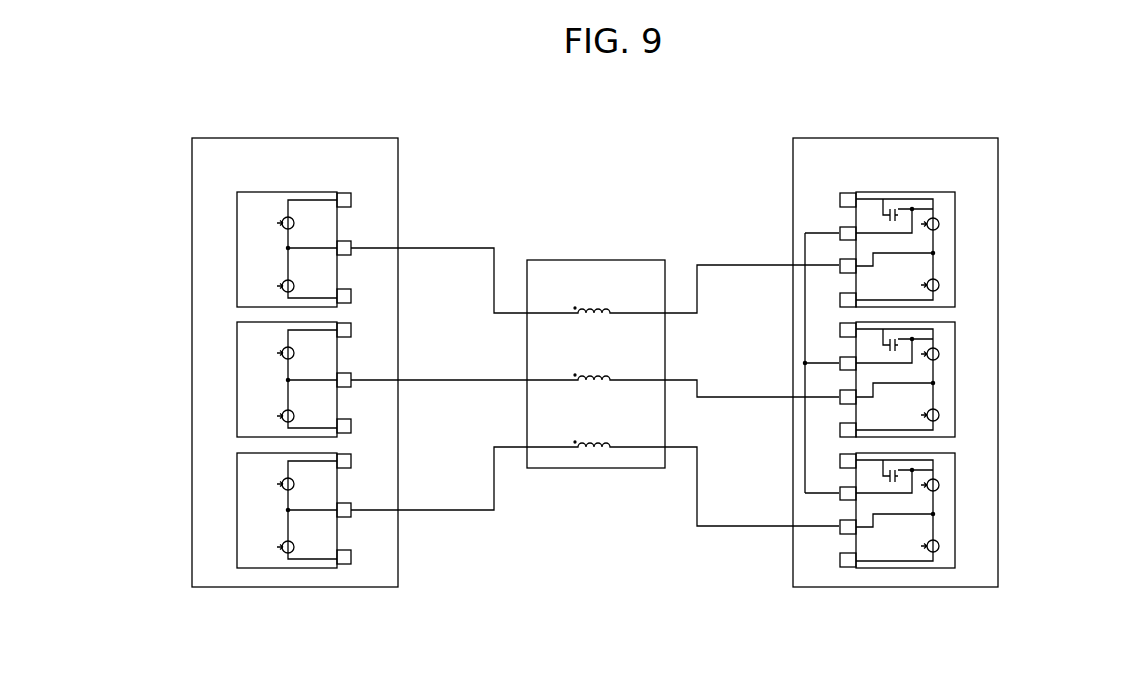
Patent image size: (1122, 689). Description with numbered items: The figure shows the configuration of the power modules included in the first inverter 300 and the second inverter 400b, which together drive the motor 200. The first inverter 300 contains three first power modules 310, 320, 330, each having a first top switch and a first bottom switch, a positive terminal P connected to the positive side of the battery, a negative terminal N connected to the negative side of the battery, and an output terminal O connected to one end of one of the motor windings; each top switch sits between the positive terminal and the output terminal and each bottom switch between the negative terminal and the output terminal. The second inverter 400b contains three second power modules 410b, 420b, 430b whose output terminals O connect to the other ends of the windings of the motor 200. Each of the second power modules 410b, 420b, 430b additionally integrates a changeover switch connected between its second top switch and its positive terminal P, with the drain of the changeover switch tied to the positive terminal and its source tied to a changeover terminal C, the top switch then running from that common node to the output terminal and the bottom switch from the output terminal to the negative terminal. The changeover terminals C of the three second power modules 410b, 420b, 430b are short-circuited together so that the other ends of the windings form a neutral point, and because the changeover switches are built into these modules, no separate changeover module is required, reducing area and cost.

The first inverter 300 is at (302, 138).
The first power module 310 is at (237, 248).
The first power module 320 is at (237, 379).
The first power module 330 is at (237, 509).
The motor 200 is at (598, 260).
The second inverter 400b is at (898, 138).
The second power module 410b is at (955, 248).
The second power module 420b is at (955, 378).
The second power module 430b is at (955, 508).